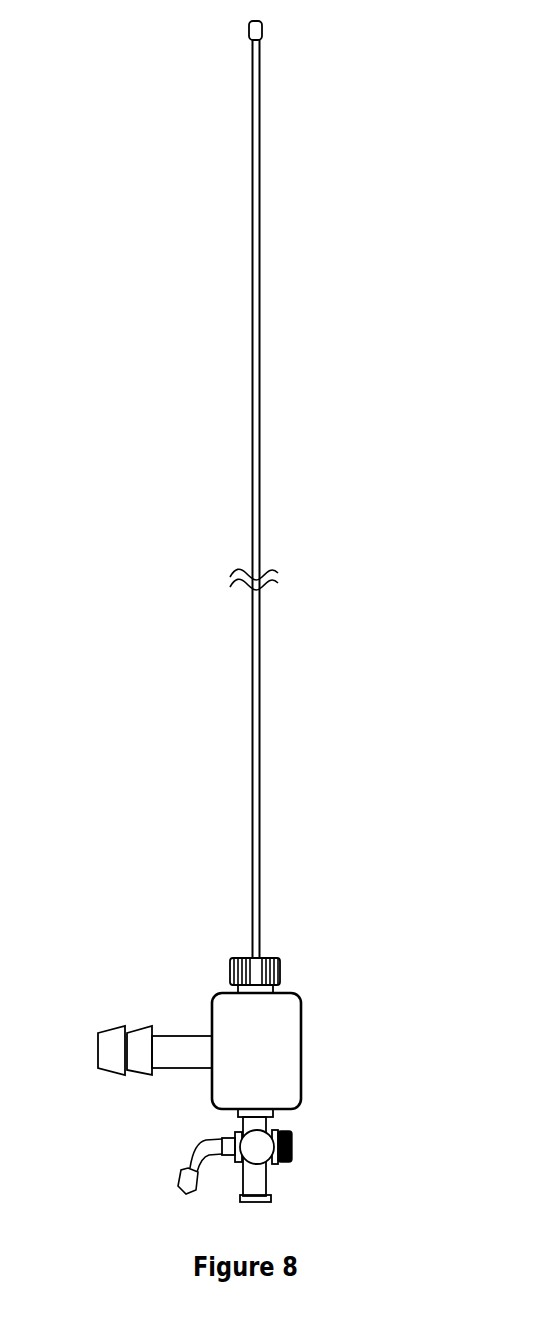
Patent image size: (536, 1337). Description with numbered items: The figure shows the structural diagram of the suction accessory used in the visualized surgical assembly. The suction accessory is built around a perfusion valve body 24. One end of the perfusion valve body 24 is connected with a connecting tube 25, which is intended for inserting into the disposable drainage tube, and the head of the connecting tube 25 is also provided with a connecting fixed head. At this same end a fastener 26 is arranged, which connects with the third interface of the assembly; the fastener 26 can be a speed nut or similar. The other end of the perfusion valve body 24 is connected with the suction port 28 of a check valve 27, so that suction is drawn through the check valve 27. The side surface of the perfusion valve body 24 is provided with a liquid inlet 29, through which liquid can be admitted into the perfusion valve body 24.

The perfusion valve body 24 is at (254, 1058).
The connecting tube 25 is at (260, 754).
The fastener 26 is at (278, 956).
The check valve 27 is at (258, 1150).
The suction port 28 is at (270, 1198).
The liquid inlet 29 is at (122, 979).